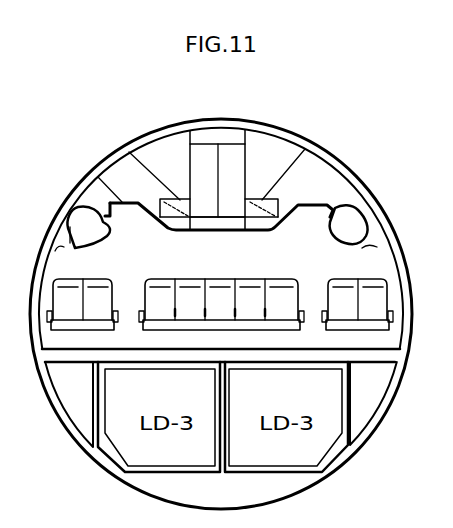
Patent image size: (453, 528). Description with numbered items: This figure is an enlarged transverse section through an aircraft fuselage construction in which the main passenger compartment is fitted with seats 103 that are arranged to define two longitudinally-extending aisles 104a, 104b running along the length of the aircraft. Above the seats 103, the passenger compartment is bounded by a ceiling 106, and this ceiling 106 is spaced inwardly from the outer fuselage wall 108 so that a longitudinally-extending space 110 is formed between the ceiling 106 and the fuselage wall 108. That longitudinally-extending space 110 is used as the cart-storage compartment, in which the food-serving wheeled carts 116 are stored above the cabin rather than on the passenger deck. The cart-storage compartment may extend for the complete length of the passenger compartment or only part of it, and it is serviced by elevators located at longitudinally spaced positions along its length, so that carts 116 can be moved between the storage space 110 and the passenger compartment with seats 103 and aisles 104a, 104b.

The seats 103 is at (226, 287).
The longitudinally-extending aisle 104a is at (125, 305).
The longitudinally-extending aisle 104b is at (310, 310).
The ceiling 106 is at (85, 177).
The outer fuselage wall 108 is at (327, 155).
The longitudinally-extending space 110 is at (168, 160).
The food-serving wheeled carts 116 is at (233, 165).